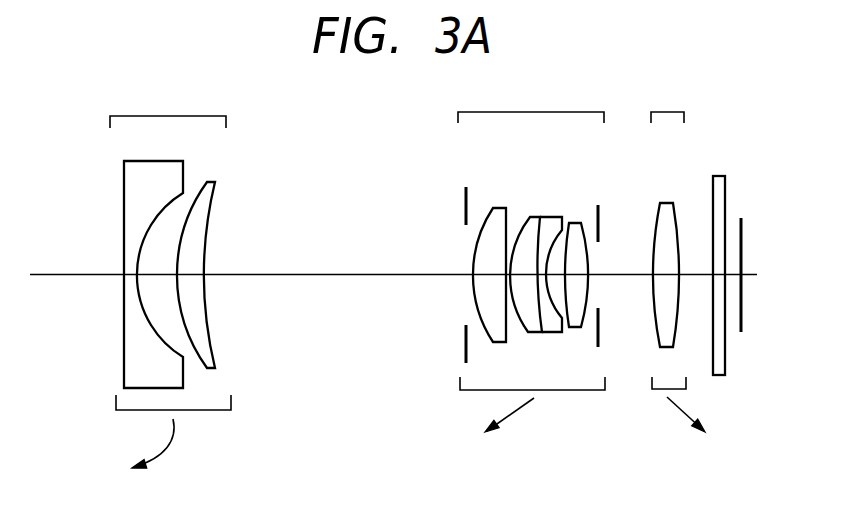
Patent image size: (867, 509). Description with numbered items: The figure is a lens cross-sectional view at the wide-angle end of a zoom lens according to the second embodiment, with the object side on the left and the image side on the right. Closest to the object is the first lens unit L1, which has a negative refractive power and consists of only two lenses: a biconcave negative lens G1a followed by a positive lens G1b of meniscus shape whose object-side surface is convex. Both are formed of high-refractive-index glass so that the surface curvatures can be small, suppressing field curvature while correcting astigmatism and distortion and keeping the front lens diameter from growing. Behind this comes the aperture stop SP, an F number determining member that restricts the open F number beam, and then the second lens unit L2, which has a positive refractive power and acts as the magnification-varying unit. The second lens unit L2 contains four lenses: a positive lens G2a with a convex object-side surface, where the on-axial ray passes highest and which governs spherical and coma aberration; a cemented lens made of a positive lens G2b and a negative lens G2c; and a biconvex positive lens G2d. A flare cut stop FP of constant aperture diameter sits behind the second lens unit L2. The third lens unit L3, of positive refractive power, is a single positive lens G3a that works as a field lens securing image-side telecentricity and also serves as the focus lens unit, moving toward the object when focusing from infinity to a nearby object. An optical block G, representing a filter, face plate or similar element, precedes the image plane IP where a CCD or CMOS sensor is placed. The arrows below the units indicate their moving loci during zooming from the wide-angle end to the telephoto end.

The first lens unit L1 is at (170, 275).
The negative lens G1a is at (135, 190).
The positive lens G1b is at (203, 223).
The second lens unit L2 is at (531, 256).
The aperture stop SP is at (466, 203).
The positive lens G2a is at (495, 213).
The positive lens G2b is at (531, 232).
The negative lens G2c is at (551, 228).
The positive lens G2d is at (575, 228).
The flare cut stop FP is at (602, 222).
The third lens unit L3 is at (678, 255).
The positive lens G3a is at (670, 203).
The optical block G is at (720, 180).
The image plane IP is at (744, 230).